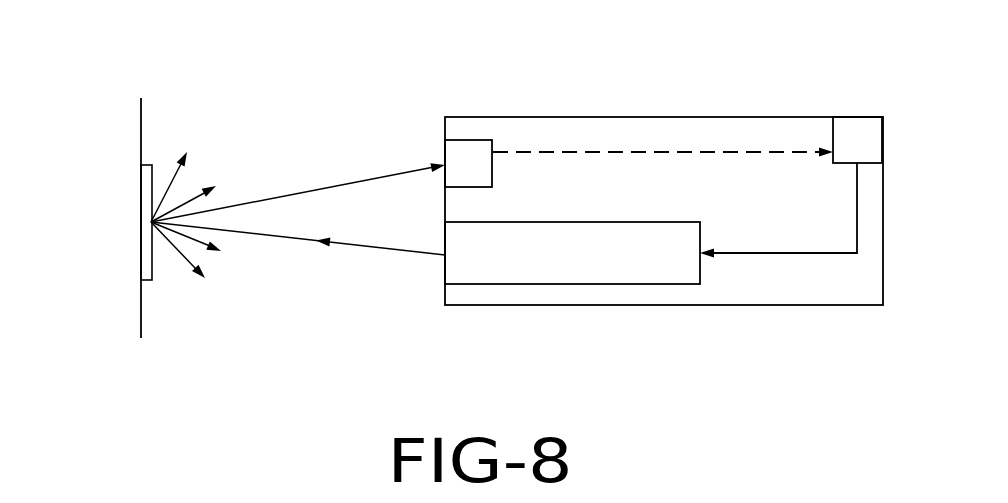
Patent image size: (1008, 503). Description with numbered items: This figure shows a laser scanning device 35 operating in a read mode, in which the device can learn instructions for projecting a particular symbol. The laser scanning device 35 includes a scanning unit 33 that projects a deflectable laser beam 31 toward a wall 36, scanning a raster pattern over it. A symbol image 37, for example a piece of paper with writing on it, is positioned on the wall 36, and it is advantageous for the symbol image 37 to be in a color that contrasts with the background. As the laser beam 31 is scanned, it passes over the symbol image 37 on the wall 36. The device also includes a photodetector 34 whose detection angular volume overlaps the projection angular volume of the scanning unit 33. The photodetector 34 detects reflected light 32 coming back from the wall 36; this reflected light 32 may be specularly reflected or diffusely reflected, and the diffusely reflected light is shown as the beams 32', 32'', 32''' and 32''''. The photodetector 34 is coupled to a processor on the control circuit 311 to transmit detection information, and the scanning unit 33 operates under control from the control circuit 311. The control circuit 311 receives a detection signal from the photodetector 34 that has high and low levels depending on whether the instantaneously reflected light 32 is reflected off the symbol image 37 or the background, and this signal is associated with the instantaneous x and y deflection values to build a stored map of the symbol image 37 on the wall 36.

The deflectable laser beam 31 is at (403, 252).
The reflected light 32 is at (298, 137).
The diffusely reflected light 32' is at (187, 116).
The diffusely reflected light 32'' is at (216, 140).
The diffusely reflected light 32''' is at (232, 286).
The diffusely reflected light 32'''' is at (188, 306).
The scanning unit 33 is at (592, 270).
The photodetector 34 is at (468, 153).
The laser scanning device 35 is at (625, 135).
The wall 36 is at (141, 293).
The symbol image 37 is at (151, 181).
The control circuit 311 is at (855, 138).